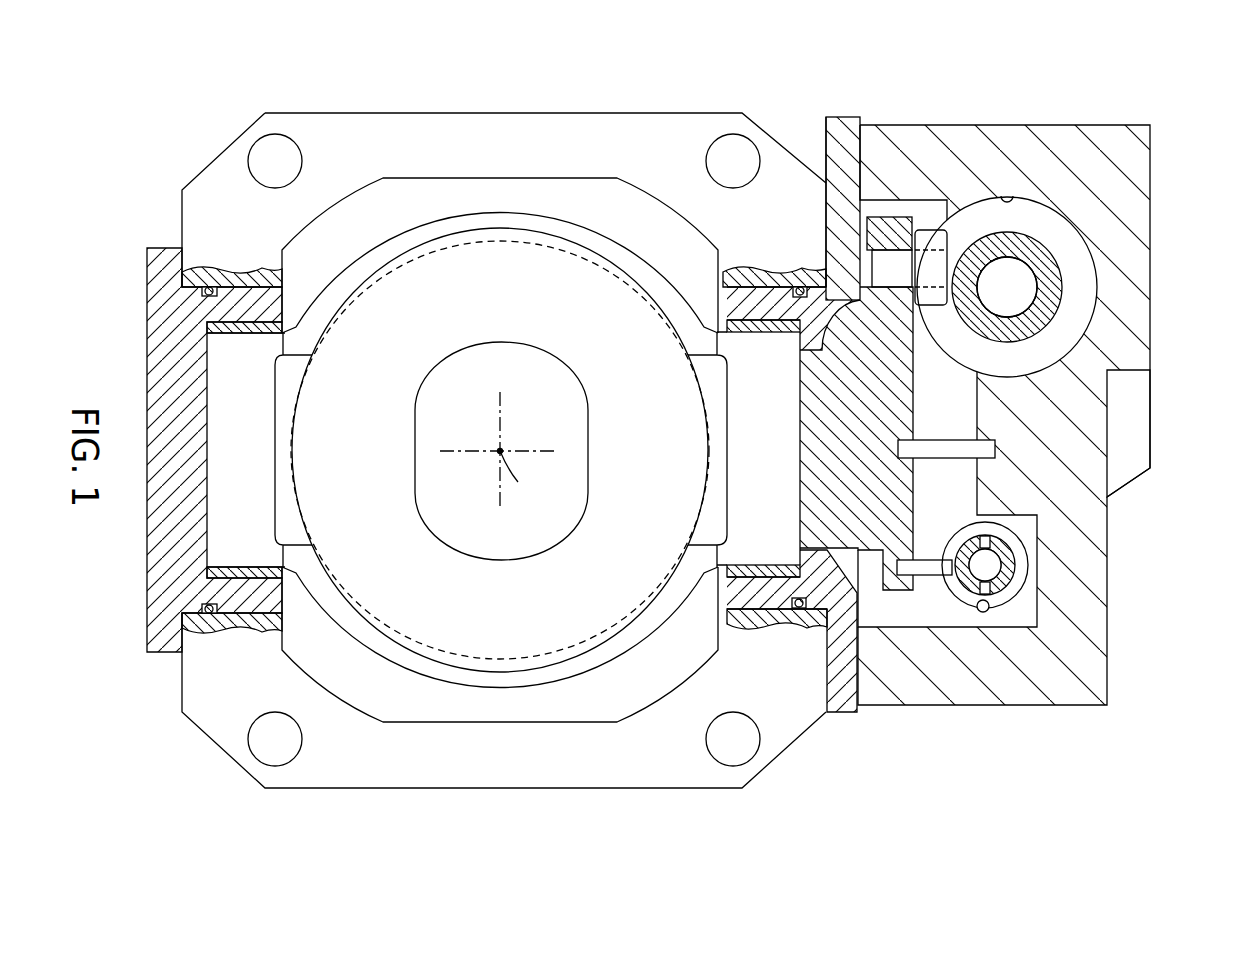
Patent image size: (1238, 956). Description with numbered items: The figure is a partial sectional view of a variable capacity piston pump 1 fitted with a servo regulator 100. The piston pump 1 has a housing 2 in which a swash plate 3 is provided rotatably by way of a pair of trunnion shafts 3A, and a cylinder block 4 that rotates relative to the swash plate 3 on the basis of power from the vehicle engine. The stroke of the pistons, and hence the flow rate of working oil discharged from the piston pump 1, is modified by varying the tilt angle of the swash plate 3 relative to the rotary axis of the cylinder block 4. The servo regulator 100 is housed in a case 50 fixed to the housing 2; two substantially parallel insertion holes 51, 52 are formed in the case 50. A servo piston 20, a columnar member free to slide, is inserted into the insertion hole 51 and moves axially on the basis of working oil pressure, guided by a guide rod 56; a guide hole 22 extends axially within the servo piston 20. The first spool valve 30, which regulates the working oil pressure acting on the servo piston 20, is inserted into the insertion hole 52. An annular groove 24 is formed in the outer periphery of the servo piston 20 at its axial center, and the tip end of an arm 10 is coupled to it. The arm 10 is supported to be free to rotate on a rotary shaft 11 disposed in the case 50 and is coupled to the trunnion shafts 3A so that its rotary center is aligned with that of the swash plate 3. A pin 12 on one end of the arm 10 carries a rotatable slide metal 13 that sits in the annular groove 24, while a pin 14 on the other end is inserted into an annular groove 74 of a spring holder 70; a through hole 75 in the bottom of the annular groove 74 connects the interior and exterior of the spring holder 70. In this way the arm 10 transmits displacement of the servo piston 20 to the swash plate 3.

The piston pump 1 is at (238, 122).
The housing 2 is at (400, 135).
The swash plate 3 is at (487, 208).
The trunnion shafts 3A is at (242, 548).
The cylinder block 4 is at (553, 248).
The arm 10 is at (892, 415).
The rotary shaft 11 is at (980, 448).
The pin 12 is at (889, 258).
The slide metal 13 is at (925, 235).
The pin 14 is at (927, 570).
The servo piston 20 is at (1013, 297).
The guide hole 22 is at (1022, 272).
The annular groove 24 is at (1053, 272).
The first spool valve 30 is at (982, 564).
The case 50 is at (1128, 160).
The insertion hole 51 is at (1012, 197).
The insertion hole 52 is at (985, 612).
The guide rod 56 is at (1090, 296).
The spring holder 70 is at (997, 587).
The annular groove 74 is at (1017, 582).
The through hole 75 is at (1003, 545).
The servo regulator 100 is at (1130, 114).